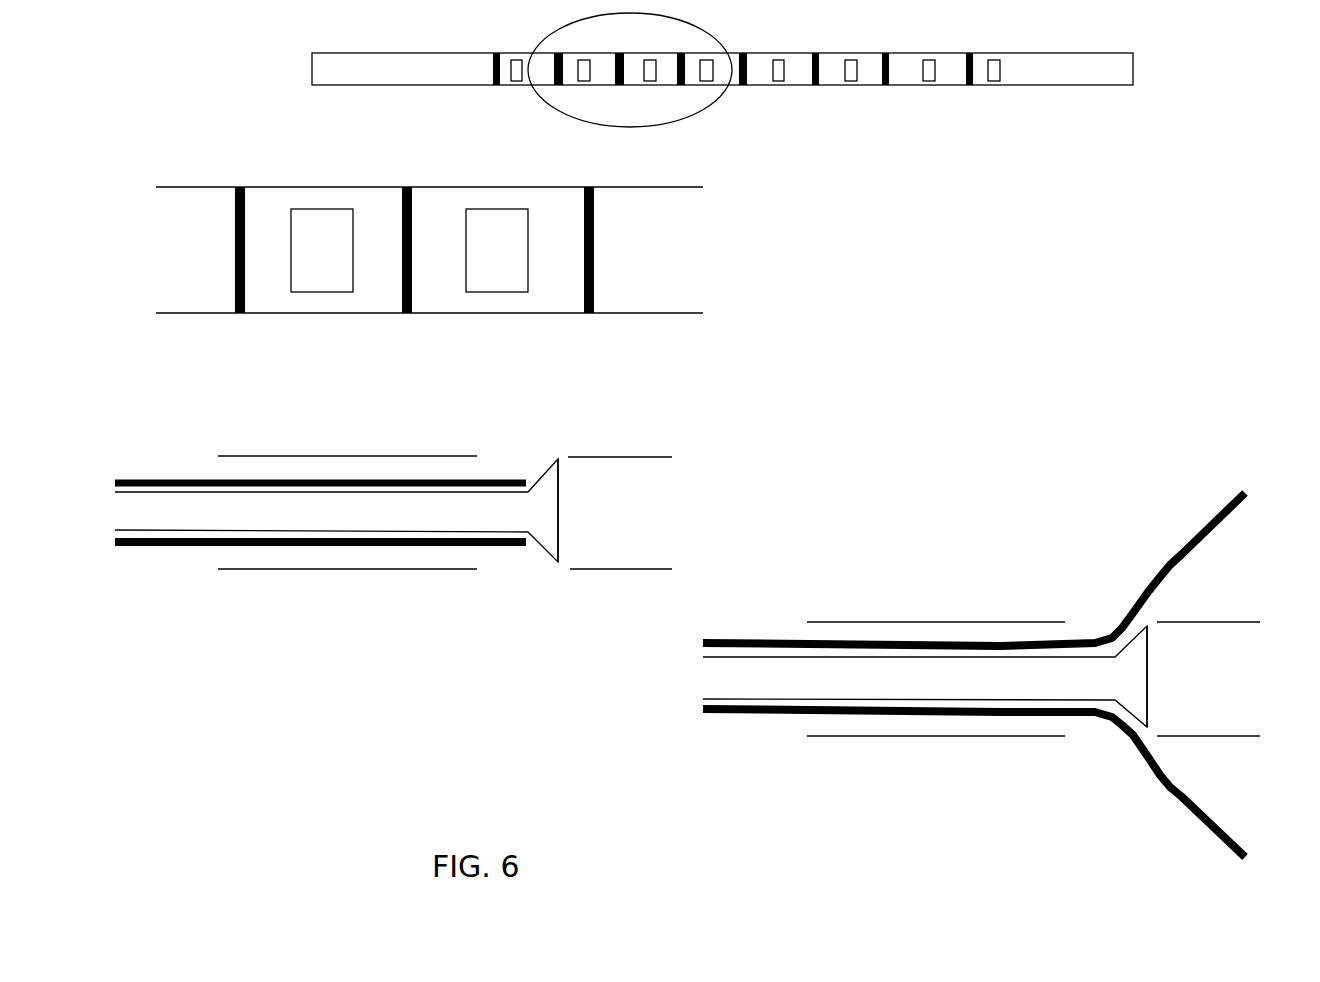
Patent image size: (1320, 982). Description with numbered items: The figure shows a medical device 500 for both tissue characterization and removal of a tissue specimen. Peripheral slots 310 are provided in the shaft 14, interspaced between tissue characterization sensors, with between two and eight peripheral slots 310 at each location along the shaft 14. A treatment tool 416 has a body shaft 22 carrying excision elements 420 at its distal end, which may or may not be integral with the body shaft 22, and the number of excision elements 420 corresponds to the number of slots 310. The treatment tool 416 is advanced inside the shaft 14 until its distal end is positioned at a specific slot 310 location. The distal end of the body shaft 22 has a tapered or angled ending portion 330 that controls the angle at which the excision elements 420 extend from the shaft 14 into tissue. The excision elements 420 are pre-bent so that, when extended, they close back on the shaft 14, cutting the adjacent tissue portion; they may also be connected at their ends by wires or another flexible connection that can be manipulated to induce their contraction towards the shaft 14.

The shaft/carrier 14 is at (413, 87).
The medical device 500 is at (970, 105).
The peripheral slots 310 is at (482, 295).
The body shaft 22 is at (395, 517).
The tapered/angled ending portion 330 is at (547, 540).
The treatment tool 416 is at (168, 560).
The excision elements 420 is at (477, 548).